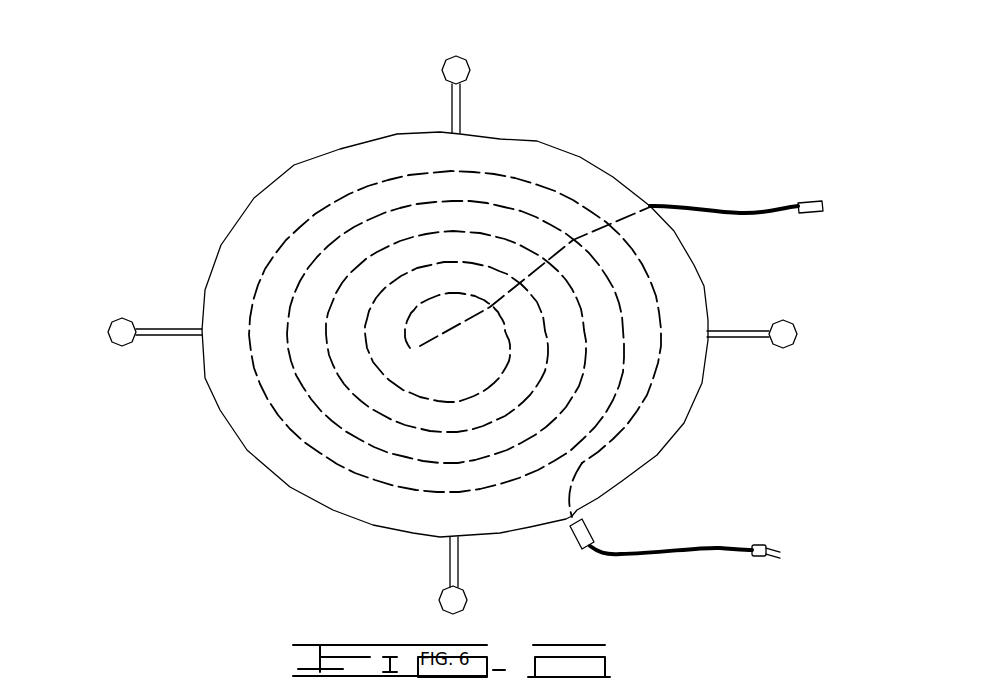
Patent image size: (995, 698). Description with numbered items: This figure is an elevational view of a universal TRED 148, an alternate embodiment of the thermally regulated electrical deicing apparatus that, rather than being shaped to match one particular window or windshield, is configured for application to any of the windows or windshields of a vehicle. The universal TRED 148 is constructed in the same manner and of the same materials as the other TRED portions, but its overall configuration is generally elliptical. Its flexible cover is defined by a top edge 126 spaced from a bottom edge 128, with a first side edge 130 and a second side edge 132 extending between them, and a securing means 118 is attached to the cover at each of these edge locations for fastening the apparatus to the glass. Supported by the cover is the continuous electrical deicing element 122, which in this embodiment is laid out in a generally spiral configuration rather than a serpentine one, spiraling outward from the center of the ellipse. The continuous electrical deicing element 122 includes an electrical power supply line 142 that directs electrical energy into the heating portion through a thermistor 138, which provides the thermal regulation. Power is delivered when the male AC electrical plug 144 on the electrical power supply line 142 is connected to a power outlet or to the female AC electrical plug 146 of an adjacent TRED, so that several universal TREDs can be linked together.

The securing means 118 is at (469, 73).
The continuous electrical deicing element 122 is at (665, 201).
The top edge 126 is at (432, 133).
The bottom edge 128 is at (435, 538).
The first side edge 130 is at (199, 326).
The second side edge 132 is at (710, 328).
The thermistor 138 is at (577, 549).
The electrical power supply line 142 is at (668, 547).
The male AC electrical plug 144 is at (760, 560).
The female AC electrical plug 146 is at (801, 203).
The universal TRED 148 is at (578, 56).